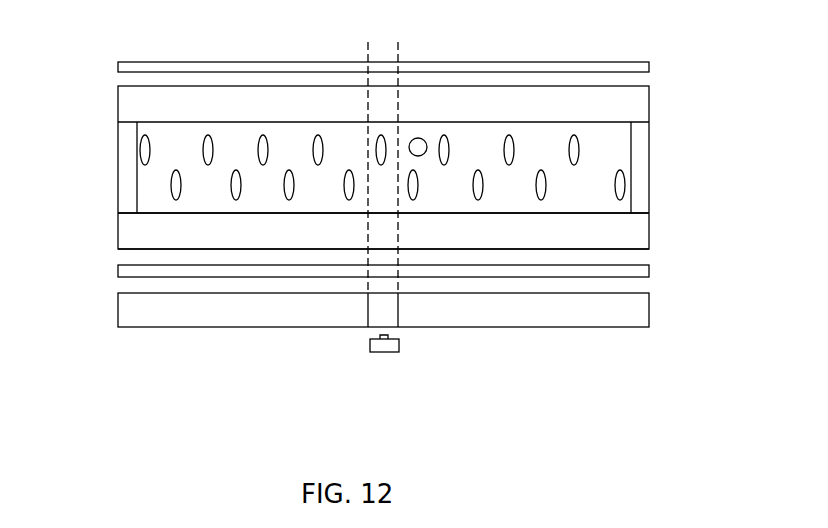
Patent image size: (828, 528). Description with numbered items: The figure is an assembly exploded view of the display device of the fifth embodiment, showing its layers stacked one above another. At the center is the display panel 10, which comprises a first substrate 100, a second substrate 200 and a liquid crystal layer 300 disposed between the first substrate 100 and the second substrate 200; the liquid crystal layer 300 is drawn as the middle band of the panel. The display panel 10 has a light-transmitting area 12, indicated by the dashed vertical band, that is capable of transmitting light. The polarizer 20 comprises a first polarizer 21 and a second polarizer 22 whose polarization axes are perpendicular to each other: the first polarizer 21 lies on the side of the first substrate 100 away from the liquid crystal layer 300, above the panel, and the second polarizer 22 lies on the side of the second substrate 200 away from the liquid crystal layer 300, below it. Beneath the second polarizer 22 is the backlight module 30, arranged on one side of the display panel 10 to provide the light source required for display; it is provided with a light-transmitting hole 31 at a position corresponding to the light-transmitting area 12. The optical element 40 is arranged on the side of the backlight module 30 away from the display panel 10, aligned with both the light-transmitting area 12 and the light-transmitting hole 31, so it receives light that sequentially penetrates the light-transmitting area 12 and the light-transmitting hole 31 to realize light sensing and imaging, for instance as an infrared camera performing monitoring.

The display panel 10 is at (444, 173).
The light-transmitting area 12 is at (398, 42).
The polarizer 20 is at (339, 181).
The first polarizer 21 is at (118, 67).
The second polarizer 22 is at (361, 283).
The backlight module 30 is at (412, 334).
The light-transmitting hole 31 is at (387, 313).
The optical element 40 is at (399, 345).
The first substrate 100 is at (649, 104).
The second substrate 200 is at (649, 226).
The liquid crystal layer 300 is at (620, 183).